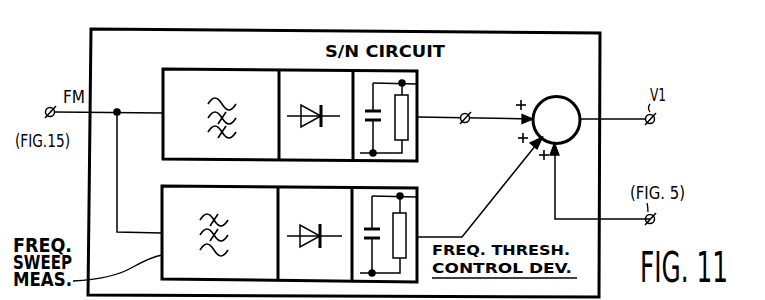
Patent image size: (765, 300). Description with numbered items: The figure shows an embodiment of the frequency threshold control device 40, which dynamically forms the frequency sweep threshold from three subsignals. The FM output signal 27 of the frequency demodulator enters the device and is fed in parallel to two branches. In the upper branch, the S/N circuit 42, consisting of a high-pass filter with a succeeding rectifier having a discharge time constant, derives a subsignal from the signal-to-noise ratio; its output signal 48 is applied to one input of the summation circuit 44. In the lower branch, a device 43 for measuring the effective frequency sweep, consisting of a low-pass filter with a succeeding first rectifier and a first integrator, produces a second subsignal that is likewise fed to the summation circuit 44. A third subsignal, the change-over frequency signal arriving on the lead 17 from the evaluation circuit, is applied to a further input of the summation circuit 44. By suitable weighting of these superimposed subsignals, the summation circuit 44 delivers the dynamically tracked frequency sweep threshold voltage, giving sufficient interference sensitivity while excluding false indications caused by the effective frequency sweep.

The frequency threshold control device 40 is at (600, 60).
The output signal of the frequency demodulator 27 is at (50, 106).
The S/N circuit 42 is at (318, 50).
The device for measuring the effective frequency sweep 43 is at (212, 188).
The summation circuit 44 is at (557, 96).
The output signal of the S/N circuit 48 is at (466, 113).
The lead 17 is at (555, 183).